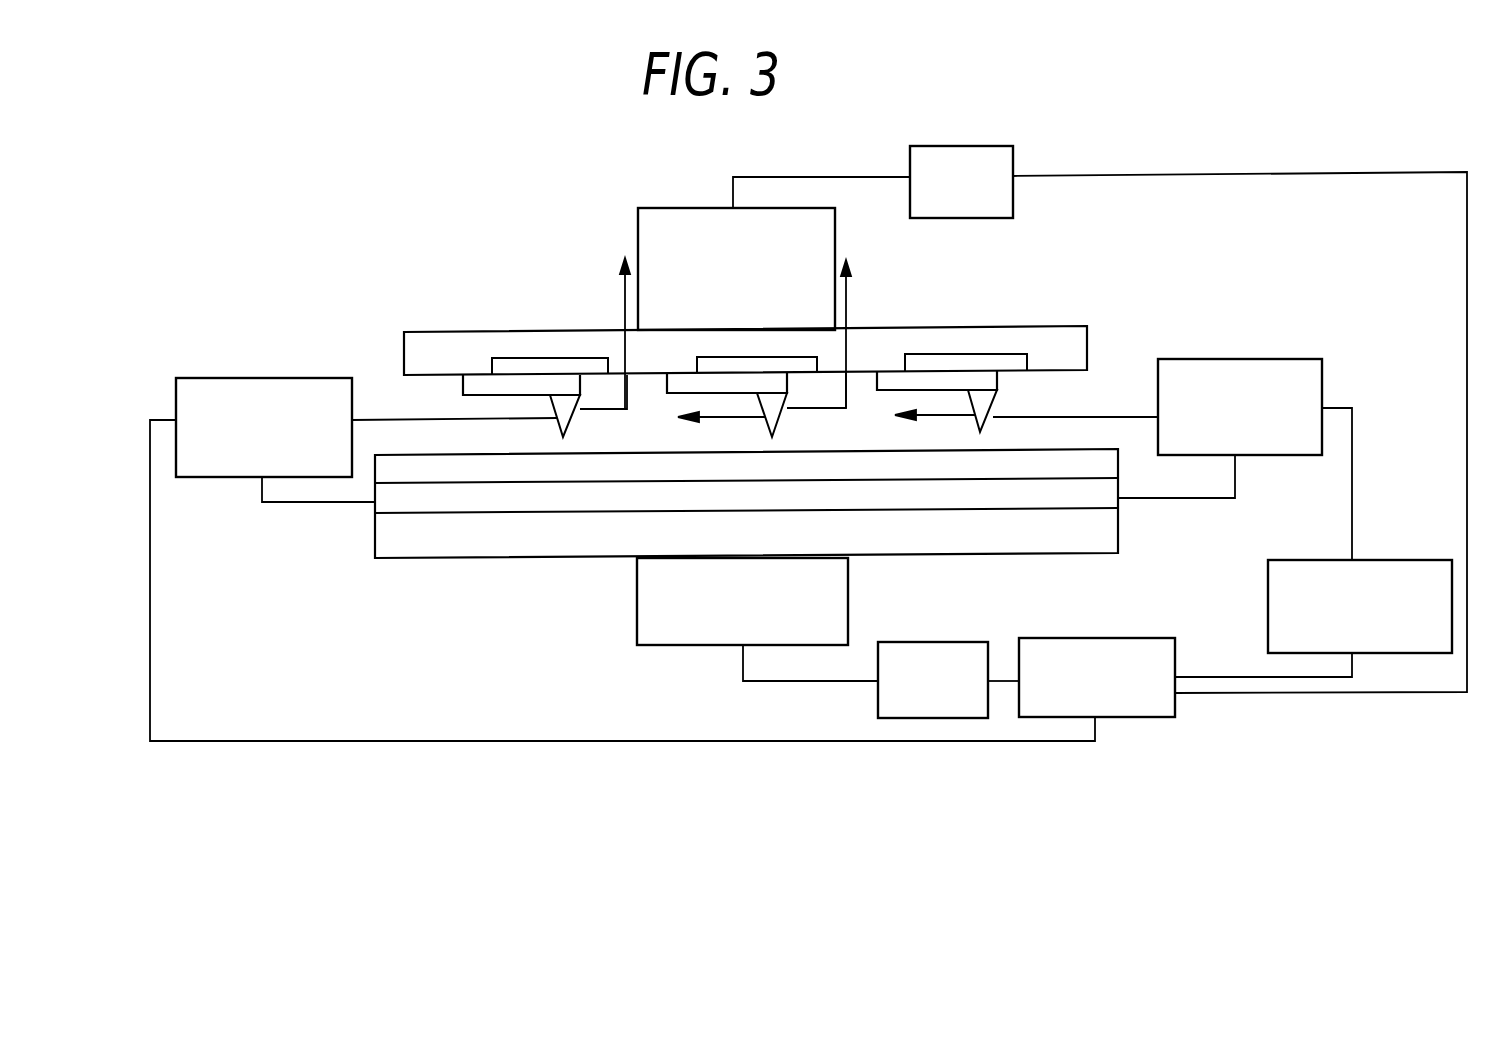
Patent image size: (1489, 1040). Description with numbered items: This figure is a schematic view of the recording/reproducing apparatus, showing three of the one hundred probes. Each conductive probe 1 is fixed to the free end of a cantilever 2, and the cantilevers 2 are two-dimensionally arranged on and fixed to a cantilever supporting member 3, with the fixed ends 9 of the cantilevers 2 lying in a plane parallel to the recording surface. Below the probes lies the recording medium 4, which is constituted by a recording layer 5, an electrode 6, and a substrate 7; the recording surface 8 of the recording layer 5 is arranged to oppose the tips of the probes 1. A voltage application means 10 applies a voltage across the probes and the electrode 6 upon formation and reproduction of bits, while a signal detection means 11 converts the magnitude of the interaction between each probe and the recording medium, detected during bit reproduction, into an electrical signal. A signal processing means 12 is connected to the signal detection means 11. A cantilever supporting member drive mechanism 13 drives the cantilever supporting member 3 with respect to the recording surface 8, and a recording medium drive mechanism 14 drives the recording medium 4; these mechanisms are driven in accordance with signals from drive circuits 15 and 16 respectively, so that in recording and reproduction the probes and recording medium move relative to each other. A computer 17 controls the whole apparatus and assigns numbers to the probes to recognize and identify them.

The probe 1 is at (567, 420).
The cantilever 2 is at (990, 383).
The cantilever supporting member 3 is at (1070, 336).
The recording medium 4 is at (292, 525).
The recording layer 5 is at (382, 467).
The electrode 6 is at (385, 503).
The substrate 7 is at (392, 548).
The recording surface 8 is at (455, 454).
The fixed ends 9 is at (475, 371).
The voltage application means 10 is at (308, 378).
The signal detection means 11 is at (1257, 358).
The signal processing means 12 is at (1403, 560).
The cantilever supporting member drive mechanism 13 is at (652, 208).
The recording medium drive mechanism 14 is at (637, 605).
The drive circuit 15 is at (990, 145).
The drive circuit 16 is at (947, 642).
The computer 17 is at (1135, 638).